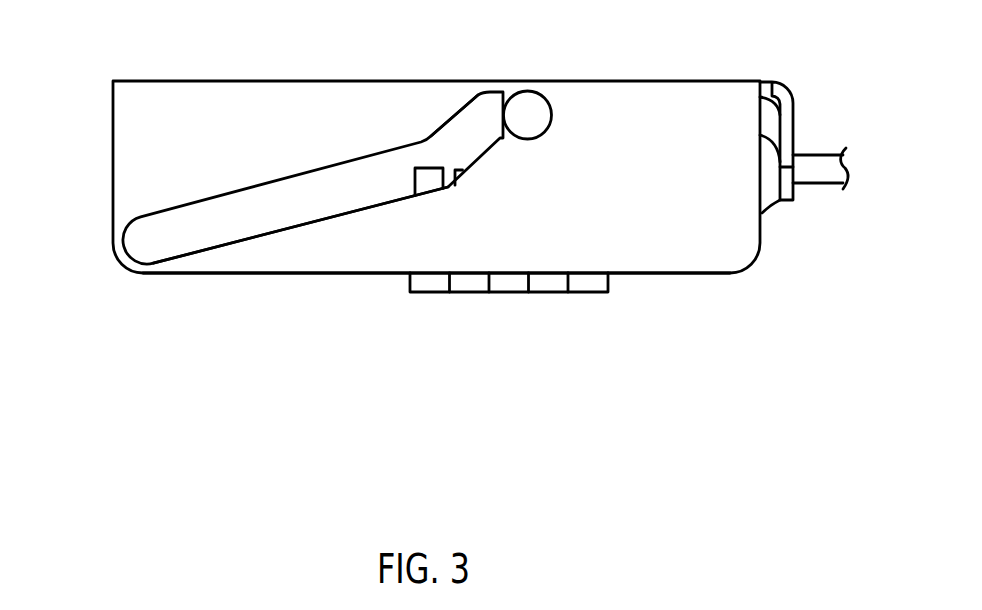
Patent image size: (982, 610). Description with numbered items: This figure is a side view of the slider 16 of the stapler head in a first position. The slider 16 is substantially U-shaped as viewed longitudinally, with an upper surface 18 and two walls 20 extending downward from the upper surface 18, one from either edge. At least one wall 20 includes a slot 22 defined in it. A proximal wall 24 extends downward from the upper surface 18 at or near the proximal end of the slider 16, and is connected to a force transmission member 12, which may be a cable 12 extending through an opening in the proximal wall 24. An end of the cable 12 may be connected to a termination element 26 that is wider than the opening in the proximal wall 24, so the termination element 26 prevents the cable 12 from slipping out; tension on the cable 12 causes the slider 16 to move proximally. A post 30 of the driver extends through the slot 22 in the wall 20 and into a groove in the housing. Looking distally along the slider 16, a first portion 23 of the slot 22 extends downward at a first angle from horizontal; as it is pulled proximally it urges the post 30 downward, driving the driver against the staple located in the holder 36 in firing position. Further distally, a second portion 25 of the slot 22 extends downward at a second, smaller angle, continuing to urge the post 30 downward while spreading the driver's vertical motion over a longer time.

The force transmission member 12 is at (820, 184).
The slider 16 is at (111, 153).
The upper surface 18 is at (217, 81).
The wall 20 is at (266, 273).
The slot 22 is at (247, 207).
The first portion of the slot 23 is at (435, 128).
The proximal wall 24 is at (797, 125).
The second portion of the slot 25 is at (329, 221).
The termination element 26 is at (762, 203).
The post 30 is at (502, 118).
The holder 36 is at (587, 292).